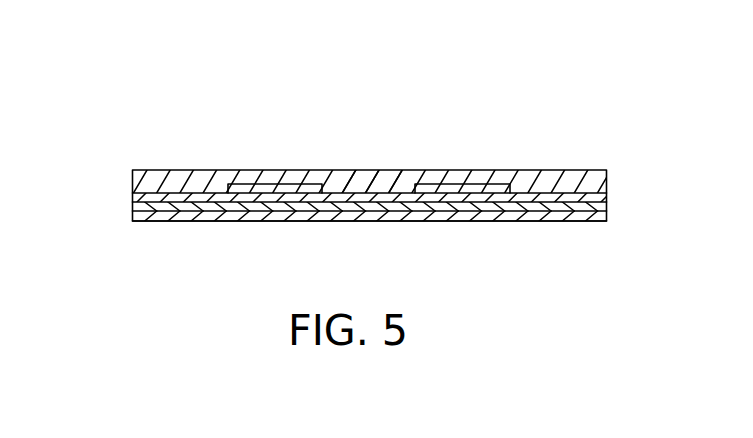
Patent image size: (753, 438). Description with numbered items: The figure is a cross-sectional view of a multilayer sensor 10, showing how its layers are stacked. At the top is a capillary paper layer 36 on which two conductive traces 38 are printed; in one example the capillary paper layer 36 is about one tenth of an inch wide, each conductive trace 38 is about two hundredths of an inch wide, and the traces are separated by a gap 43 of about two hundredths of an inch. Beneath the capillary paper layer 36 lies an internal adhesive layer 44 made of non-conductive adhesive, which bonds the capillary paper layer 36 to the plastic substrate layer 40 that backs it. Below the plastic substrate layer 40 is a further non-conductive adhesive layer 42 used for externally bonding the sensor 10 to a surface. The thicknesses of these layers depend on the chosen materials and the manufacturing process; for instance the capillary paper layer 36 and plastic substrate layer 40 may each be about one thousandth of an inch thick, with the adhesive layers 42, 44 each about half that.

The sensor 10 is at (325, 42).
The capillary paper layer 36 is at (607, 173).
The conductive traces 38 is at (317, 183).
The plastic substrate layer 40 is at (132, 207).
The non-conductive adhesive layer 42 is at (132, 217).
The gap region between electrodes 43 is at (362, 187).
The internal adhesive layer 44 is at (132, 195).